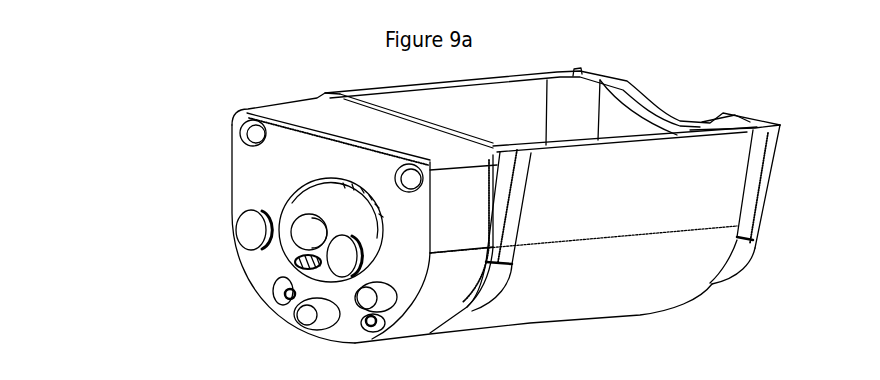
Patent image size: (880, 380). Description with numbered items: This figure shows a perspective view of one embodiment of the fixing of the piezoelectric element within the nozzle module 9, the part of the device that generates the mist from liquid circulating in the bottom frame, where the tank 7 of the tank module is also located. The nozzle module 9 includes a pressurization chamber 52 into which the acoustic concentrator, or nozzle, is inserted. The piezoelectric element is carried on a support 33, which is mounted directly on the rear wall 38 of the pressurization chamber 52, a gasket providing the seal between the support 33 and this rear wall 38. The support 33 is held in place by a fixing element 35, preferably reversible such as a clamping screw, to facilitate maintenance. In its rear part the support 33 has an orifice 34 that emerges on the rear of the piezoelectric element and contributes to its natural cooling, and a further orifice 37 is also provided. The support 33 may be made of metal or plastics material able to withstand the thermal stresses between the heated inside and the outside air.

The nozzle module 9 is at (185, 113).
The tank 7 is at (530, 108).
The pressurization chamber 52 is at (307, 116).
The rear wall of chamber 38 is at (258, 165).
The fixing element 35 is at (242, 230).
The piezoelectric element support 33 is at (287, 250).
The orifice 37 is at (312, 250).
The orifice in support 34 is at (318, 233).